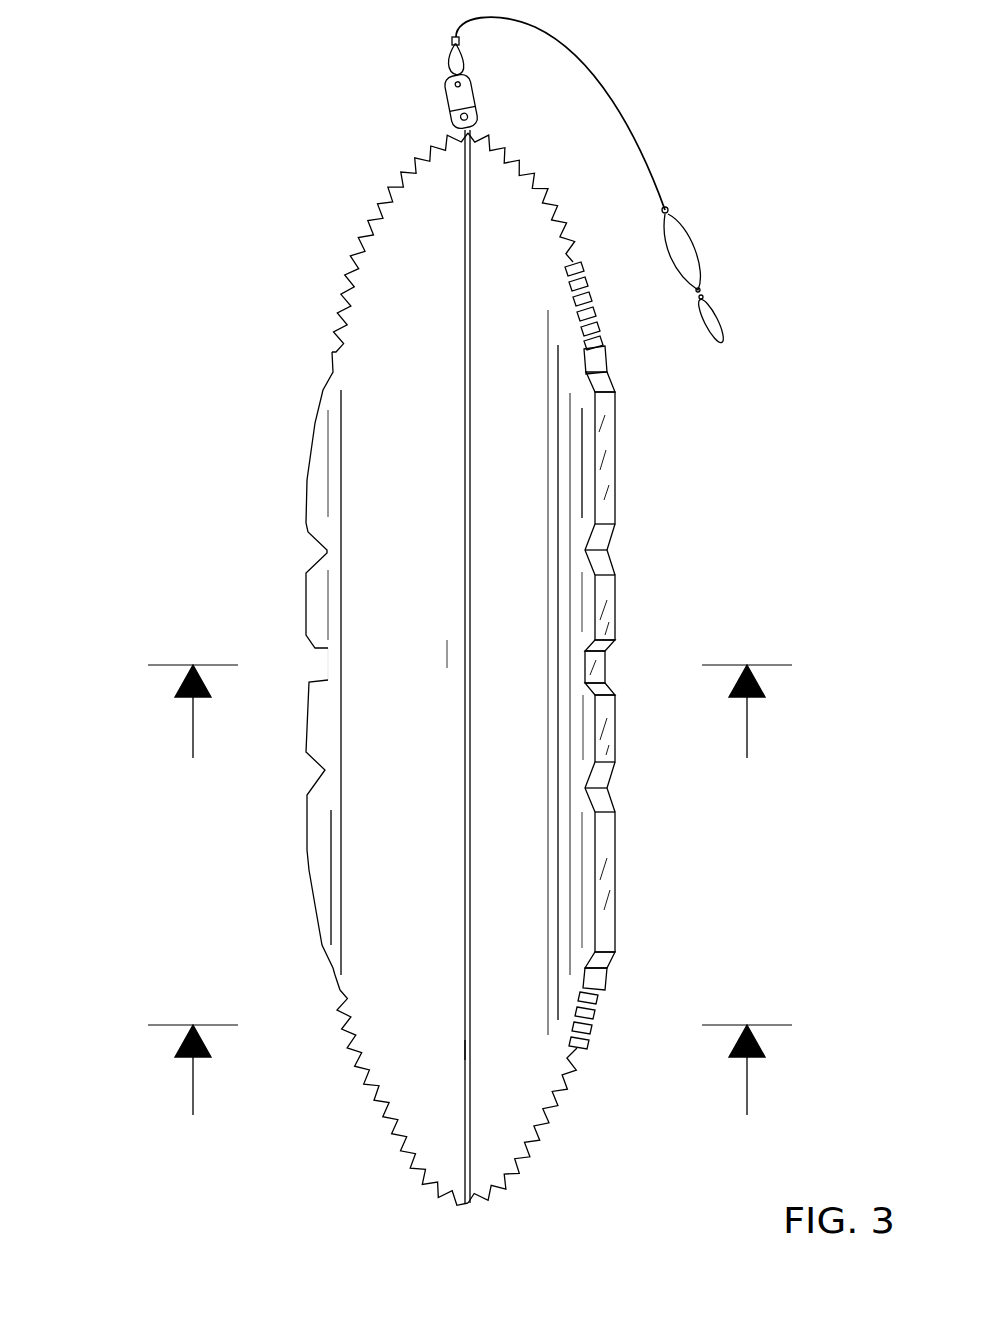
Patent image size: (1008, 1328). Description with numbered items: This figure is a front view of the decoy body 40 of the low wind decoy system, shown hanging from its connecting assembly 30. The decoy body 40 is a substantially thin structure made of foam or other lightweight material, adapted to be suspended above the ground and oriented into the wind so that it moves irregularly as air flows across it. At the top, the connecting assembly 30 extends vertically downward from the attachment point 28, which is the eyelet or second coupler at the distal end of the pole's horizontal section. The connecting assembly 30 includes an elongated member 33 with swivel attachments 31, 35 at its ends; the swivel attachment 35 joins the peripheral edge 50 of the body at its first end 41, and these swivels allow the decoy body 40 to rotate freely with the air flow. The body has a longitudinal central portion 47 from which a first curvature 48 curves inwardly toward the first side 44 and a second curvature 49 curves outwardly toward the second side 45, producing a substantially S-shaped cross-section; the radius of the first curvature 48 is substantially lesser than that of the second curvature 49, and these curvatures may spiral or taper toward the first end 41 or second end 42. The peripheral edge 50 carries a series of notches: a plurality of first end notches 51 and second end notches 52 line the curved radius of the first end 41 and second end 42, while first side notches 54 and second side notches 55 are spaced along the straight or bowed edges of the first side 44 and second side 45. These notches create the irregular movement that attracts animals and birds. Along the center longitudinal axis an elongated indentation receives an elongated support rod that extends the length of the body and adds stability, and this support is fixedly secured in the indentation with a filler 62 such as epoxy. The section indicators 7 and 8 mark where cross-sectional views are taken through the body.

The attachment point 28 is at (717, 317).
The connecting assembly 30 is at (695, 62).
The swivel attachment 31 is at (703, 297).
The elongated member 33 is at (638, 147).
The swivel attachment 35 is at (451, 97).
The decoy body 40 is at (212, 176).
The first end 41 is at (550, 270).
The second end 42 is at (502, 1118).
The first side 44 is at (612, 732).
The second side 45 is at (320, 727).
The longitudinal central portion 47 is at (447, 665).
The first curvature 48 is at (588, 598).
The second curvature 49 is at (318, 590).
The peripheral edge 50 is at (302, 426).
The first end notches 51 is at (572, 262).
The second end notches 52 is at (583, 1048).
The first side notches 54 is at (610, 530).
The second side notches 55 is at (308, 534).
The filler 62 is at (470, 1055).
The section line 7- 7 is at (470, 743).
The section line 8- 8 is at (470, 1100).